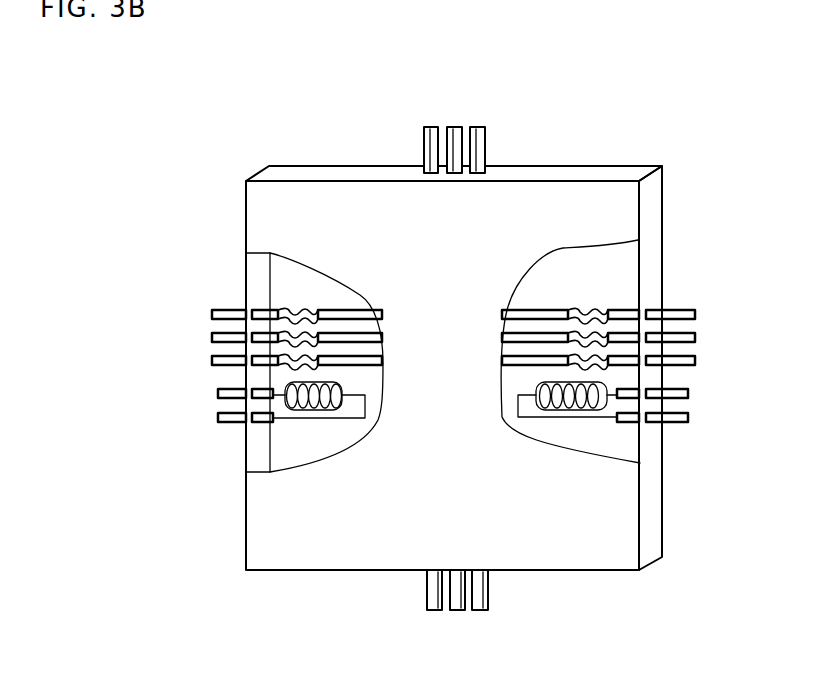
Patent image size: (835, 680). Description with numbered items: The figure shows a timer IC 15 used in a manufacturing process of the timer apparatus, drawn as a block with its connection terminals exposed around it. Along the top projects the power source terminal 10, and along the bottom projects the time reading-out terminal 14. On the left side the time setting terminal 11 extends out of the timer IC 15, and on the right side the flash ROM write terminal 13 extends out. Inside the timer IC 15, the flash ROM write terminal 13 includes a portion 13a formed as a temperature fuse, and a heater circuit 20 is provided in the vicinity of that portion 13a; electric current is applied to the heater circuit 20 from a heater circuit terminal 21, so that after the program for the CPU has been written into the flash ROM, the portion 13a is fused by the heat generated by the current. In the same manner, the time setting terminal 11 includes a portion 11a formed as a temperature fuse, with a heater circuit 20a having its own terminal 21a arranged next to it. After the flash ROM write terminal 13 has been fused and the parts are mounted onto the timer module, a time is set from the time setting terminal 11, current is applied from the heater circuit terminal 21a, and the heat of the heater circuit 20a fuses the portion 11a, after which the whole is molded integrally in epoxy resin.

The power source terminal 10 is at (478, 127).
The time setting terminal 11 is at (212, 315).
The portion formed as a temperature fuse 11a is at (295, 286).
The flash ROM write terminal 13 is at (695, 360).
The portion formed as a temperature fuse 13a is at (594, 288).
The time reading-out terminal 14 is at (435, 610).
The timer IC 15 is at (560, 170).
The heater circuit 20 is at (540, 399).
The heater circuit 20a is at (350, 385).
The heater circuit terminal 21 is at (688, 393).
The heater circuit terminal 21a is at (218, 394).